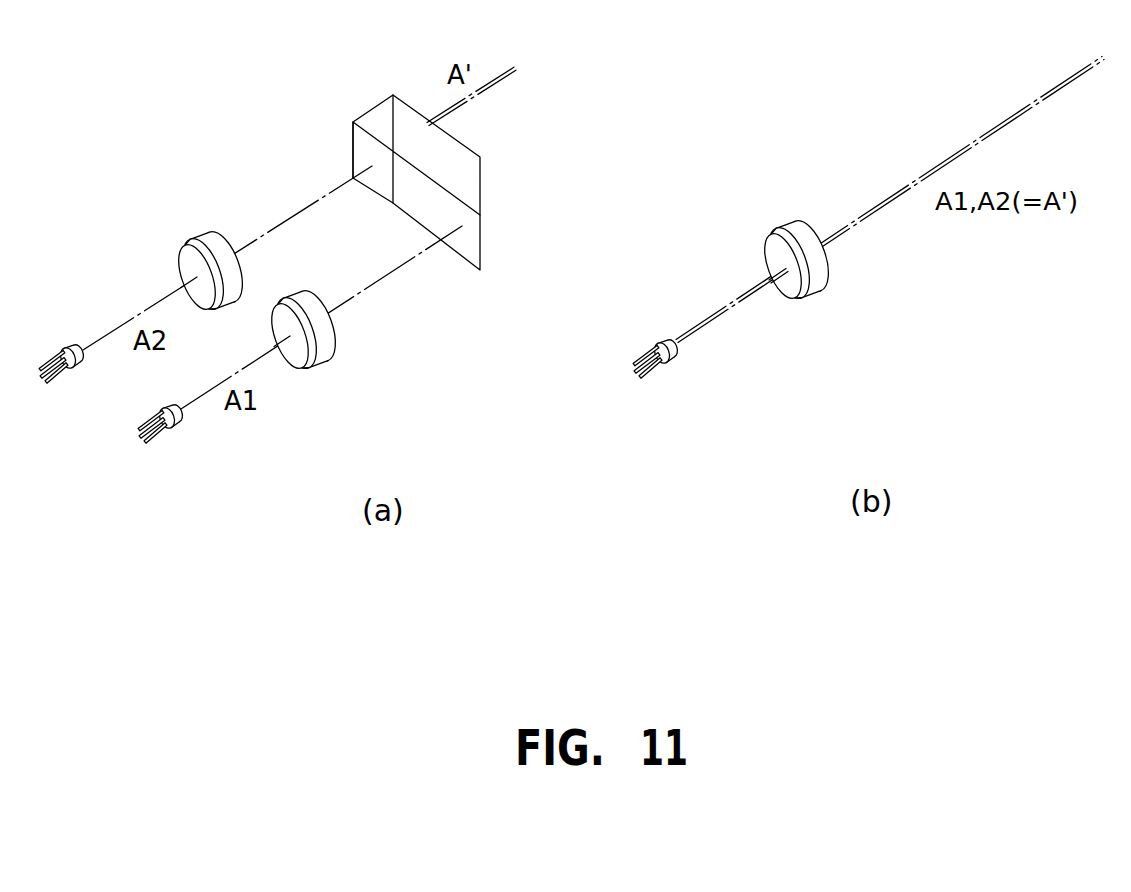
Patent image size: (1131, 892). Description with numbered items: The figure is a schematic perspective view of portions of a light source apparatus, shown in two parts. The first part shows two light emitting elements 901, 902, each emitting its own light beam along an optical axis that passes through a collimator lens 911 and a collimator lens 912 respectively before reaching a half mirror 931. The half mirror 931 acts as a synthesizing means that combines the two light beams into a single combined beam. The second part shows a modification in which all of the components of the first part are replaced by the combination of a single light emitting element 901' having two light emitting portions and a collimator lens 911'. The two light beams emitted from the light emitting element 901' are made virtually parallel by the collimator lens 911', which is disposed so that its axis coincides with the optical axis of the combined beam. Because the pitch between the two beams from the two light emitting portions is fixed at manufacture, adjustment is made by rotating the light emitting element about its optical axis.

The light emitting element 901 is at (167, 454).
The light emitting element 902 is at (73, 378).
The collimator lens 911 is at (303, 363).
The collimator lens 912 is at (181, 243).
The half mirror 931 is at (473, 172).
The light emitting element 901' is at (669, 391).
The collimator lens 911' is at (796, 296).